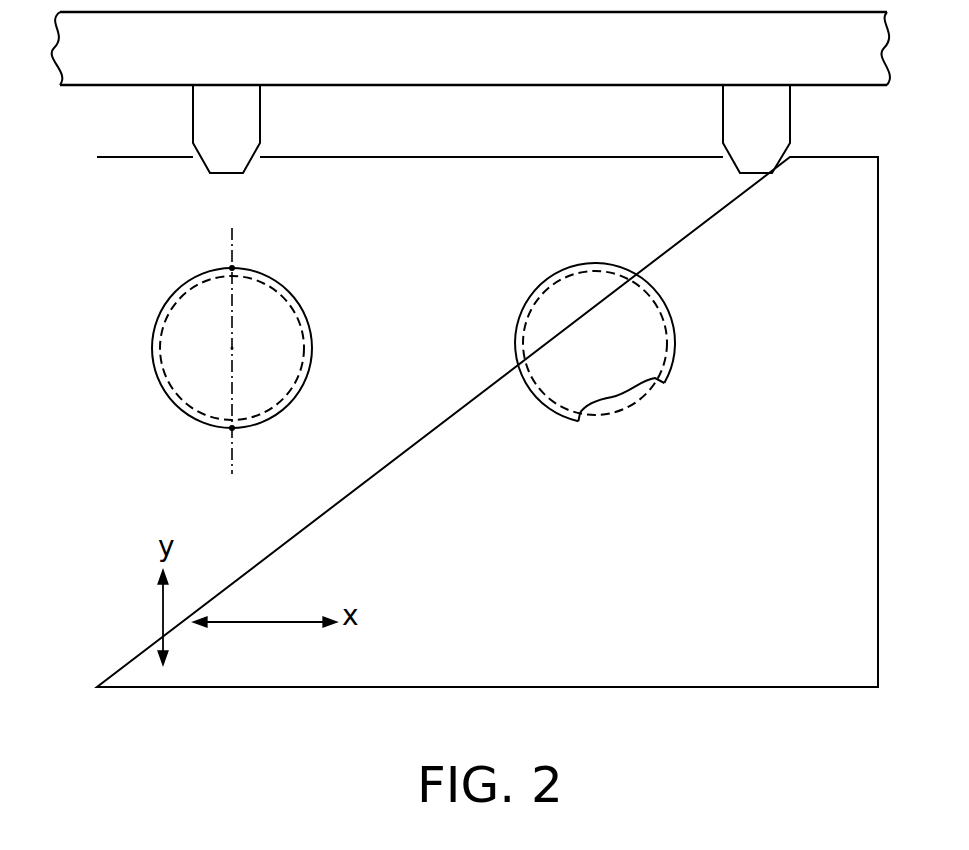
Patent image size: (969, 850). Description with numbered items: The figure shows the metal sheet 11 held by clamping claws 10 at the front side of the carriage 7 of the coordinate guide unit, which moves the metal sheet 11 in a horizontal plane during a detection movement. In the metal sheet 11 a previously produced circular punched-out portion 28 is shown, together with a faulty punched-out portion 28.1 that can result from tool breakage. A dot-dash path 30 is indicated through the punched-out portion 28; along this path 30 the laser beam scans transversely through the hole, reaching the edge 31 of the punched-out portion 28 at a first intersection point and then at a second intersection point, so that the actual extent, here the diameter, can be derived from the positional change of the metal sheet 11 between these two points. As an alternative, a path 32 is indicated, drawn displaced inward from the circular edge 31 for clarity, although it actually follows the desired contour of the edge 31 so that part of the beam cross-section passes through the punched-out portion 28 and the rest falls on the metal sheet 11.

The carriage 7 is at (481, 61).
The clamping claws 10 is at (244, 137).
The metal sheet 11 is at (840, 641).
The punched-out portion 28 is at (298, 377).
The faulty punched-out portion 28.1 is at (683, 298).
The path 30 is at (232, 349).
The edge 31 is at (292, 290).
The path 32 is at (297, 380).